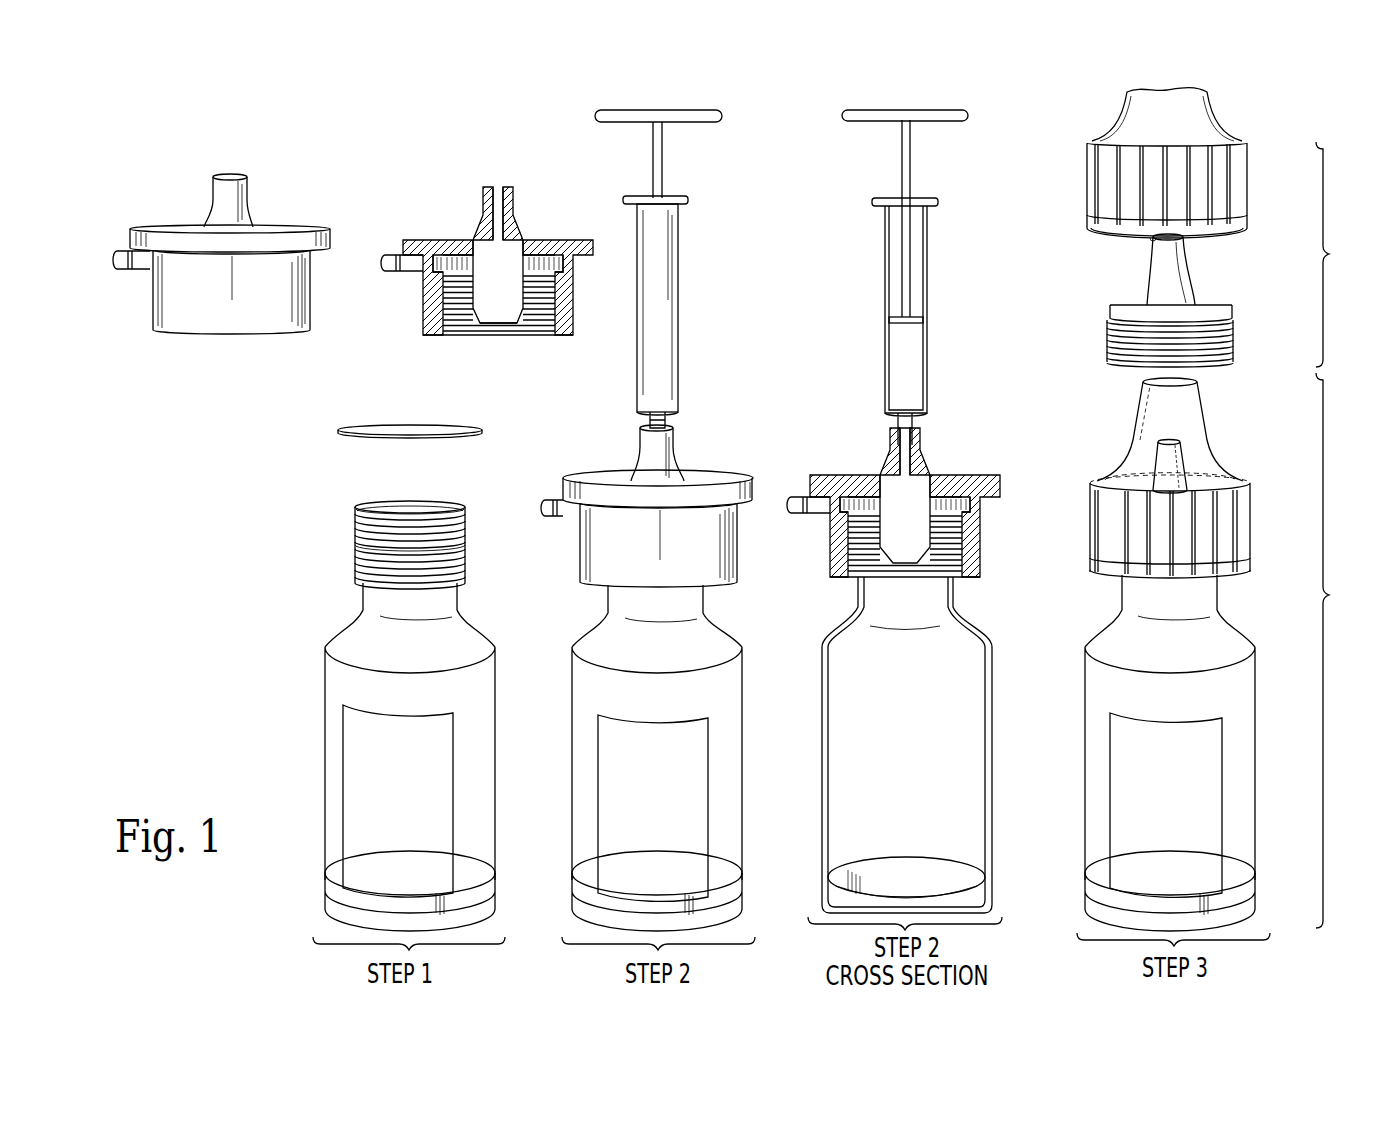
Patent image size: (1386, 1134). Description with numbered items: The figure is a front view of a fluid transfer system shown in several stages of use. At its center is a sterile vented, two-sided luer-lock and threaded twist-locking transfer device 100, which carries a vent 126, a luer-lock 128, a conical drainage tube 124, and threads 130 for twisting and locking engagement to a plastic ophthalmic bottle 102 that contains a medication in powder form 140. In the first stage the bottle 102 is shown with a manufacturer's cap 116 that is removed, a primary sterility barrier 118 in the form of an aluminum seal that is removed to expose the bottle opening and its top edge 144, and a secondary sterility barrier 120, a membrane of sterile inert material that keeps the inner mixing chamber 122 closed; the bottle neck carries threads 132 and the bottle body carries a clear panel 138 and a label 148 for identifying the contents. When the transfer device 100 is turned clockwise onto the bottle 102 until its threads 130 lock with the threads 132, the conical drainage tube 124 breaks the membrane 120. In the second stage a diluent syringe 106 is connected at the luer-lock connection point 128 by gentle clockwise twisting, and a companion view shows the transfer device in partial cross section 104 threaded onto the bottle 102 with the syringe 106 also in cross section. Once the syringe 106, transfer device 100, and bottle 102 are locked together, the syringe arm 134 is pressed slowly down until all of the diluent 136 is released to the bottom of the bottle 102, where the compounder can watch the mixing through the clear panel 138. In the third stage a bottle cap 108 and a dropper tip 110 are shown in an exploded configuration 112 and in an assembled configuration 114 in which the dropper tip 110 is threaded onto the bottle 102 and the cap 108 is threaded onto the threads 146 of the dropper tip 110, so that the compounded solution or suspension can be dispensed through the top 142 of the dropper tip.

The transfer device 100 is at (148, 362).
The plastic bottle 102 is at (319, 695).
The partial cross section 104 is at (843, 463).
The diluent syringe 106 is at (806, 252).
The bottle cap 108 is at (1245, 143).
The dropper tip 110 is at (1159, 363).
The exploded configuration 112 is at (1341, 254).
The assembled configuration 114 is at (1341, 650).
The cap 116 is at (337, 431).
The primary sterility barrier 118 is at (360, 514).
The secondary sterility barrier 120 is at (352, 547).
The inner mixing chamber 122 is at (906, 822).
The conical drainage tube 124 is at (498, 322).
The vent 126 is at (121, 250).
The luer-lock 128 is at (231, 166).
The threads 130 is at (460, 336).
The threads 132 is at (466, 547).
The syringe arm 134 is at (685, 108).
The diluent 136 is at (931, 367).
The clear panel 138 is at (330, 891).
The medication in powder form 140 is at (283, 779).
The top of dropper 142 is at (1150, 241).
The top edge 144 is at (465, 510).
The threads of the dropper tip 146 is at (1105, 341).
The label 148 is at (782, 803).